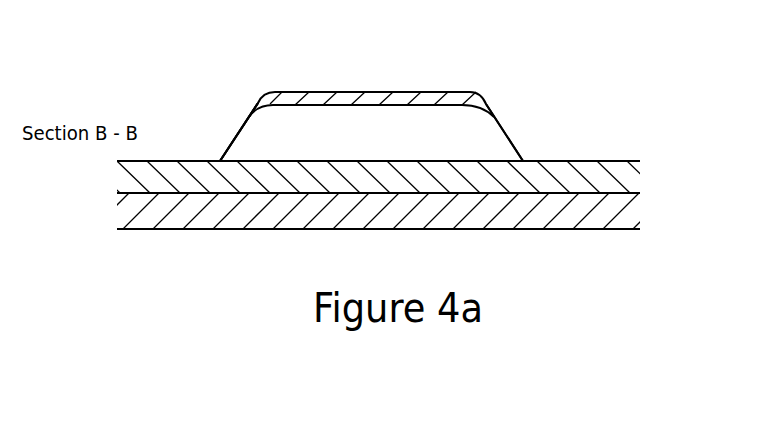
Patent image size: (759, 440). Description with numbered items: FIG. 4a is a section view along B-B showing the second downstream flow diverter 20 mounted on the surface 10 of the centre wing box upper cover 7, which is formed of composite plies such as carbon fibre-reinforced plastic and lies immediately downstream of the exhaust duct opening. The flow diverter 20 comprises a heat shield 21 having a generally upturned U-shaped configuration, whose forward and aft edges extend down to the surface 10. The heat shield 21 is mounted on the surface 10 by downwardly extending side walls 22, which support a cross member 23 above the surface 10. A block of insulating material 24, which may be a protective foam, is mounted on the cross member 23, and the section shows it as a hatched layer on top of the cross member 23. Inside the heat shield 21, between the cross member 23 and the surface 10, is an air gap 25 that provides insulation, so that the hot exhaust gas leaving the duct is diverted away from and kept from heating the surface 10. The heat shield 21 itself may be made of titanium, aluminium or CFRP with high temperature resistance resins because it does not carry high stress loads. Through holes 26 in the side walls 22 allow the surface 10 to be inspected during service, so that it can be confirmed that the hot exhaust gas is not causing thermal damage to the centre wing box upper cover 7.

The centre wing box upper cover 7 is at (632, 183).
The surface 10 is at (610, 162).
The second downstream flow diverter 20 is at (516, 84).
The heat shield 21 is at (520, 154).
The side walls 22 is at (246, 119).
The cross member 23 is at (428, 105).
The block of insulating material 24 is at (317, 99).
The air gap 25 is at (386, 144).
The through holes 26 is at (233, 142).